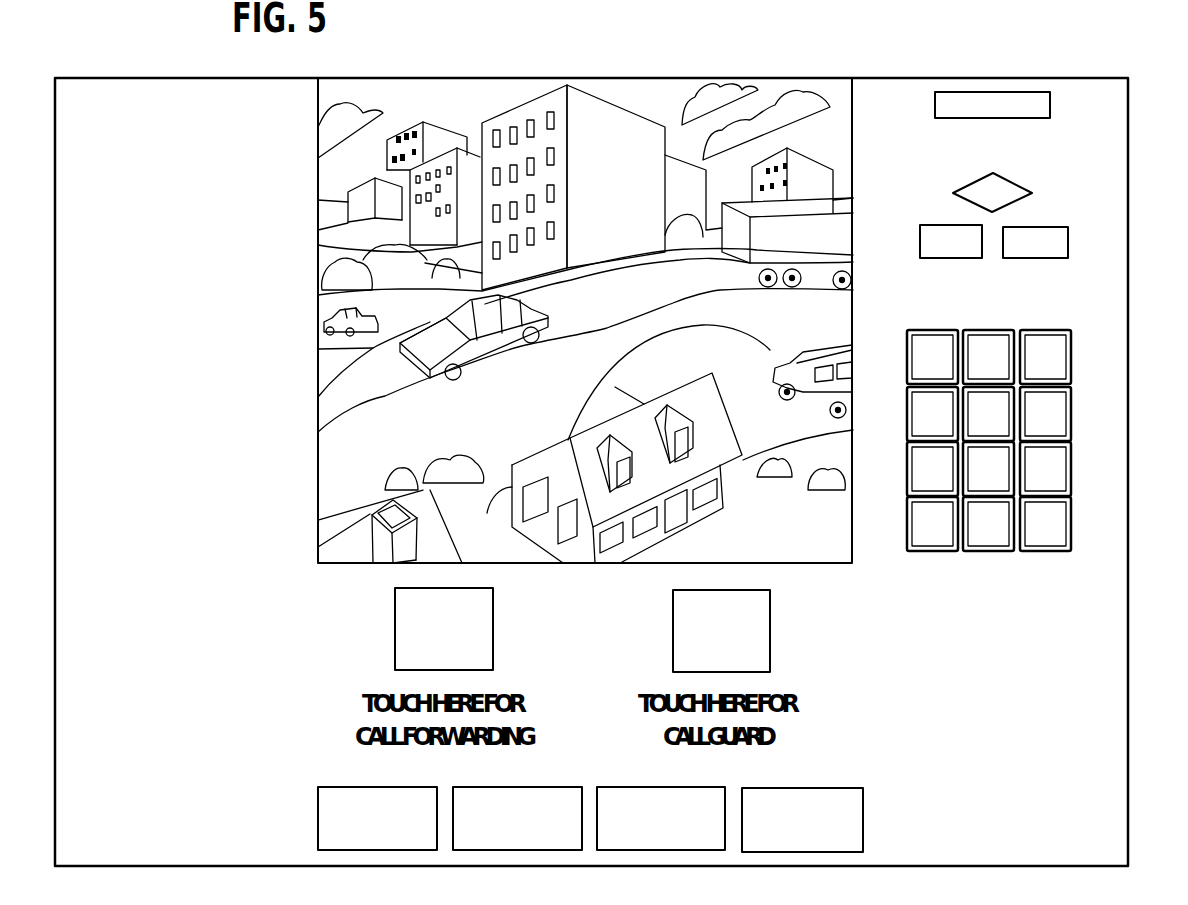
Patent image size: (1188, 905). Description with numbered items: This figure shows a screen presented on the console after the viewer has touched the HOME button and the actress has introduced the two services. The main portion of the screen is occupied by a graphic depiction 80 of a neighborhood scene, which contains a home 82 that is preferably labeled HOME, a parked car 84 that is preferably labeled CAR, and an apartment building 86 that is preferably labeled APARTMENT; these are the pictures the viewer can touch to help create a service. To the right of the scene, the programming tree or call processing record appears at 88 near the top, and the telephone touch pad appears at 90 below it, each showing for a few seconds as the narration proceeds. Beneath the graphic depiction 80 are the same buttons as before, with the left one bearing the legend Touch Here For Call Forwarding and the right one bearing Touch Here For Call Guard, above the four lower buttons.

The graphic depiction 80 is at (445, 125).
The home 82 is at (540, 462).
The parked car 84 is at (812, 352).
The apartment building 86 is at (600, 110).
The programming tree or call processing record 88 is at (1042, 102).
The telephone touch pad 90 is at (1062, 422).